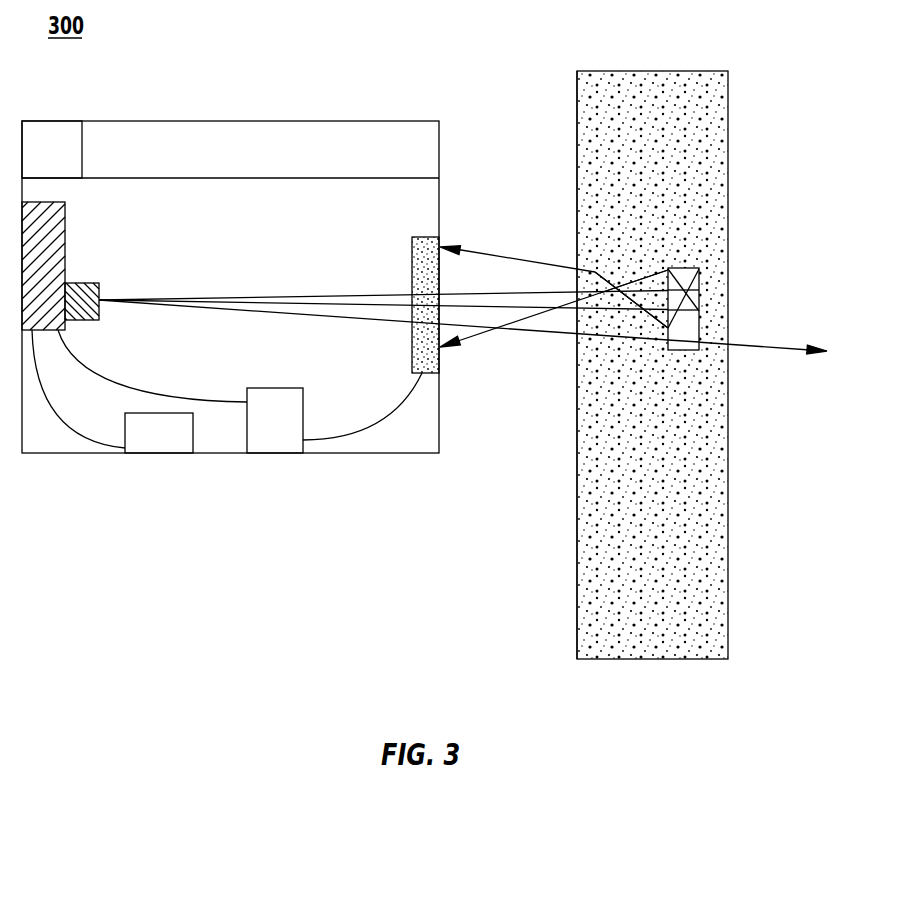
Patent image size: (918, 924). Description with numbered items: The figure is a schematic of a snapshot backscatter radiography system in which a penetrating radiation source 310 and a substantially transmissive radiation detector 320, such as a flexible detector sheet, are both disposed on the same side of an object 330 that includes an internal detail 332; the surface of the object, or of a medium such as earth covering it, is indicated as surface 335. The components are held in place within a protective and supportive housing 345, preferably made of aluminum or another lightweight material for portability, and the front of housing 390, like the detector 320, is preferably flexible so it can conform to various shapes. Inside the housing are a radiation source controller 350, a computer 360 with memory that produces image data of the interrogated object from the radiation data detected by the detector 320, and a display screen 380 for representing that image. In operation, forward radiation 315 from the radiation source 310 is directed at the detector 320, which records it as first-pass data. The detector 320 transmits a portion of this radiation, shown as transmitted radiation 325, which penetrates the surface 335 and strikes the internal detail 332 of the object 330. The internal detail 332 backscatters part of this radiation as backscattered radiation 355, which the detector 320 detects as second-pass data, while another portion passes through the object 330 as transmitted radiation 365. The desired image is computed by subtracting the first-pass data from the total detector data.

The penetrating radiation source 310 is at (65, 236).
The forward radiation 315 is at (218, 297).
The substantially transmissive radiation detector 320 is at (440, 353).
The transmitted radiation 325 is at (484, 271).
The object 330 is at (728, 220).
The internal detail 332 is at (699, 290).
The surface 335 is at (577, 529).
The housing 345 is at (230, 120).
The radiation source controller 350 is at (167, 438).
The backscattered radiation 355 is at (498, 250).
The computer 360 is at (276, 438).
The transmitted radiation 365 is at (757, 348).
The display screen 380 is at (180, 152).
The front of housing 390 is at (439, 198).